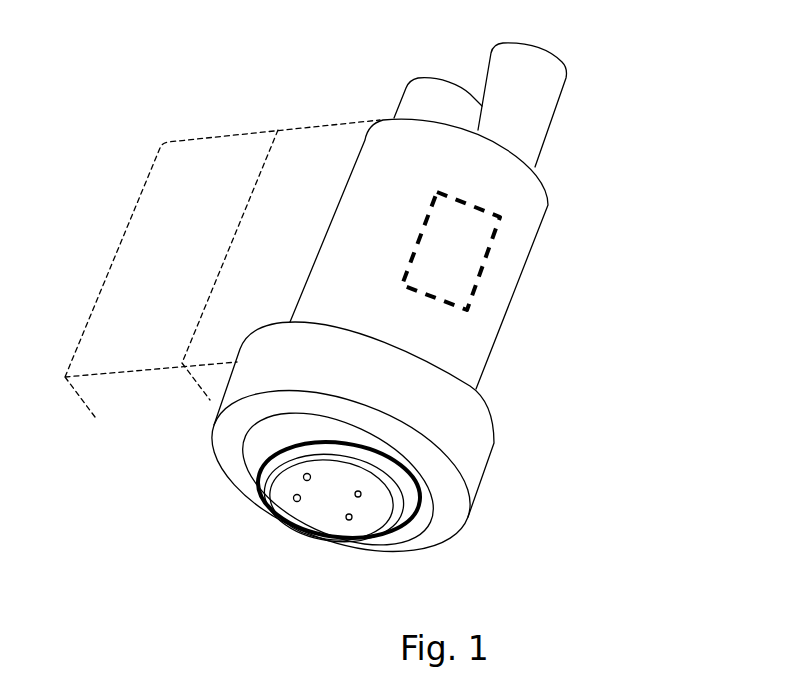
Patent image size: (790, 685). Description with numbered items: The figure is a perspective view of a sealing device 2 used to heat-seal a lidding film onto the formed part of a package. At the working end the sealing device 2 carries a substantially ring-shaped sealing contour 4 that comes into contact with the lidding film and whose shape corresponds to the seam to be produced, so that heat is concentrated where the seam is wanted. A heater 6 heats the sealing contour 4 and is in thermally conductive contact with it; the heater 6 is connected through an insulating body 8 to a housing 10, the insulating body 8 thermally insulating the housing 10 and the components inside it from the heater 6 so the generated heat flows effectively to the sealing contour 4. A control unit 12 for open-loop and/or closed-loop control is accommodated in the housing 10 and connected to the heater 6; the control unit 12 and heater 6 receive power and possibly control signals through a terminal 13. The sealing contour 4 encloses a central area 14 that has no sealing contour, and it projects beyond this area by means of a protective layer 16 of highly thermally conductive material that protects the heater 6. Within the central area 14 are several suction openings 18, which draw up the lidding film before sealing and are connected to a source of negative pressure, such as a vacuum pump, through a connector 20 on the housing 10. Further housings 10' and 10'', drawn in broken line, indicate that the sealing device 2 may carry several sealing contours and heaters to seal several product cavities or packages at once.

The sealing device 2 is at (139, 65).
The sealing contour 4 is at (280, 543).
The heater 6 is at (424, 482).
The insulating body 8 is at (473, 453).
The housing 10 is at (455, 254).
The housing 10' is at (222, 223).
The housing 10'' is at (256, 209).
The control unit 12 is at (470, 243).
The terminal 13 is at (442, 82).
The central area 14 is at (308, 489).
The protective layer 16 is at (352, 543).
The suction opening 18 is at (349, 517).
The connector 20 is at (523, 125).